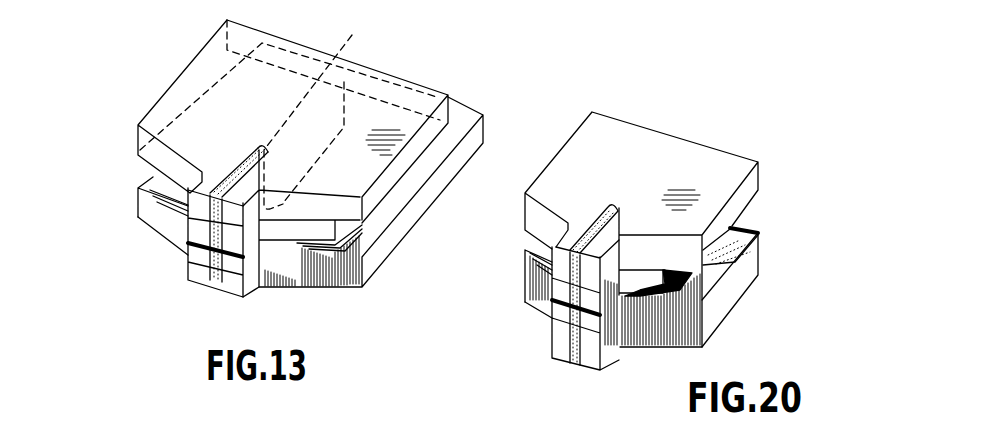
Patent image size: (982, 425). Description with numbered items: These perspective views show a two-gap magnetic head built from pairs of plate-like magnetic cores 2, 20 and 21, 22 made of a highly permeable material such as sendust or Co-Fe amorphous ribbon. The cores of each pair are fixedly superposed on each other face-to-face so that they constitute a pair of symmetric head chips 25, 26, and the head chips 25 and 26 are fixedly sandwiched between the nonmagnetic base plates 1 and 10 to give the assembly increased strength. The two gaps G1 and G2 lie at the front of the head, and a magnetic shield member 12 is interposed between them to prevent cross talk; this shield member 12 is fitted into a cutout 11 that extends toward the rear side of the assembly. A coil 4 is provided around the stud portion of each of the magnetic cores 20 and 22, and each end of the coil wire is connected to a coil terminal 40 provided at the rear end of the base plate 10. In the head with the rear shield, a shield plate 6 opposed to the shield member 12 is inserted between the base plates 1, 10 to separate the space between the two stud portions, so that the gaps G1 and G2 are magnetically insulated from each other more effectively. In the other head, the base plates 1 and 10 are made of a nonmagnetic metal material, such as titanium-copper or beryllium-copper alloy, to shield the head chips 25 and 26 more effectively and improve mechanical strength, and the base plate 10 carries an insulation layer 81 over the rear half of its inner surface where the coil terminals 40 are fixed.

In FIG. 13, the base plate 1 is at (432, 92).
In FIG. 20, the base plate 1 is at (722, 162).
In FIG. 13, the magnetic core 2 is at (240, 326).
In FIG. 20, the magnetic core 2 is at (632, 354).
In FIG. 13, the coil 4 is at (152, 198).
In FIG. 20, the coil 4 is at (547, 265).
In FIG. 13, the shield plate 6 is at (357, 27).
In FIG. 13, the base plate 10 is at (452, 175).
In FIG. 20, the base plate 10 is at (740, 292).
In FIG. 13, the cutout 11 is at (257, 146).
In FIG. 13, the magnetic shield member 12 is at (237, 168).
In FIG. 20, the magnetic shield member 12 is at (605, 206).
In FIG. 13, the magnetic core 20 is at (238, 290).
In FIG. 20, the magnetic core 20 is at (607, 358).
In FIG. 13, the magnetic core 21 is at (197, 228).
In FIG. 20, the magnetic core 21 is at (560, 288).
In FIG. 13, the magnetic core 22 is at (195, 250).
In FIG. 20, the magnetic core 22 is at (558, 312).
In FIG. 13, the head chip 25 is at (282, 337).
In FIG. 20, the head chip 25 is at (630, 413).
In FIG. 13, the head chip 26 is at (114, 237).
In FIG. 20, the head chip 26 is at (465, 282).
In FIG. 20, the coil terminal 40 is at (735, 228).
In FIG. 20, the insulation layer 81 is at (753, 243).
In FIG. 13, the gap G1 is at (217, 280).
In FIG. 20, the gap G1 is at (570, 363).
In FIG. 13, the gap G2 is at (192, 283).
In FIG. 20, the gap G2 is at (560, 328).